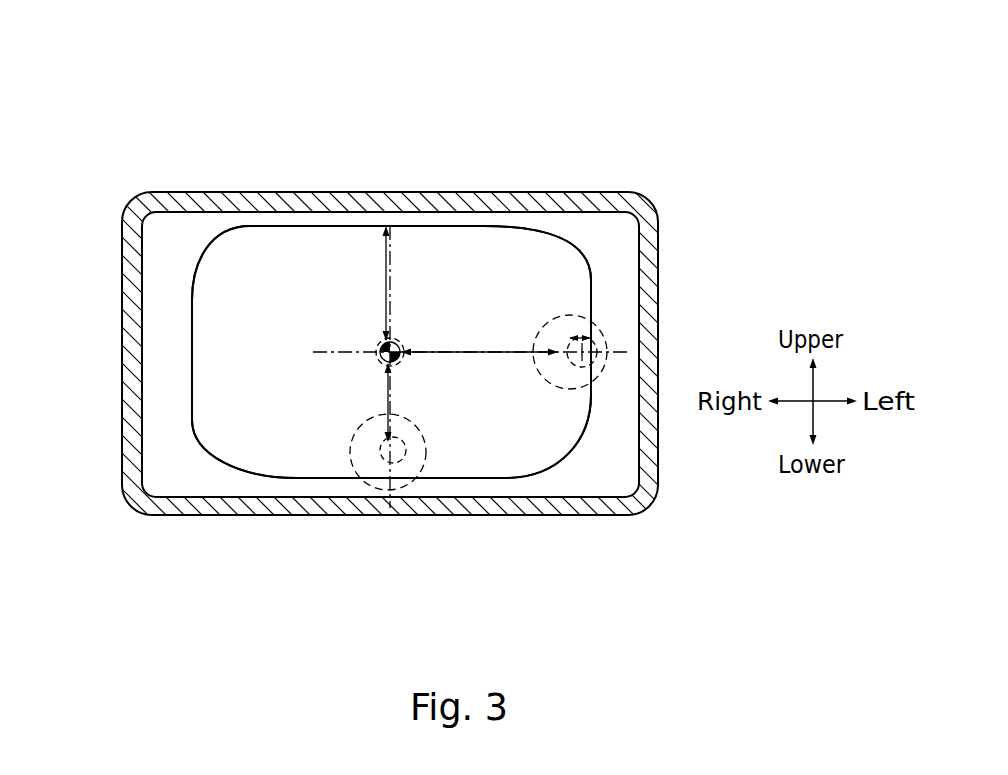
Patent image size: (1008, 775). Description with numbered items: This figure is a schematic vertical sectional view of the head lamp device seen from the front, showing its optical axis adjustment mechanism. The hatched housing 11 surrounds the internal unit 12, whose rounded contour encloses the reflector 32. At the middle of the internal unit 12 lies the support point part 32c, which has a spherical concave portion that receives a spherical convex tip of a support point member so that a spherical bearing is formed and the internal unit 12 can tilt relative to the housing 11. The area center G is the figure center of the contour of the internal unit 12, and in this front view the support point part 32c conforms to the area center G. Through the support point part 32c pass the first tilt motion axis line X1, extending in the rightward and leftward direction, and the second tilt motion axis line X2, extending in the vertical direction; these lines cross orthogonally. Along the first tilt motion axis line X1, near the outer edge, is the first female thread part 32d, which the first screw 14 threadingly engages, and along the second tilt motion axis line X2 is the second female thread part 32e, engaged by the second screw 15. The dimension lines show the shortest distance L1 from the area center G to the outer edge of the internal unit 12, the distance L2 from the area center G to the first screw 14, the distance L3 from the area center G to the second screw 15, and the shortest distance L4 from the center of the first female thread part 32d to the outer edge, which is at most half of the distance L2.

The housing 11 is at (493, 314).
The internal unit 12 is at (192, 303).
The first screw 14 is at (597, 323).
The second screw 15 is at (348, 497).
The reflector 32 is at (203, 388).
The support point part 32c is at (373, 343).
The first female thread part 32d is at (586, 378).
The second female thread part 32e is at (420, 480).
The area center G is at (400, 344).
The first tilt motion axis line X1 is at (325, 347).
The second tilt motion axis line X2 is at (392, 291).
The shortest distance L1 is at (373, 283).
The distance L2 is at (479, 369).
The distance L3 is at (405, 402).
The shortest distance L4 is at (580, 337).